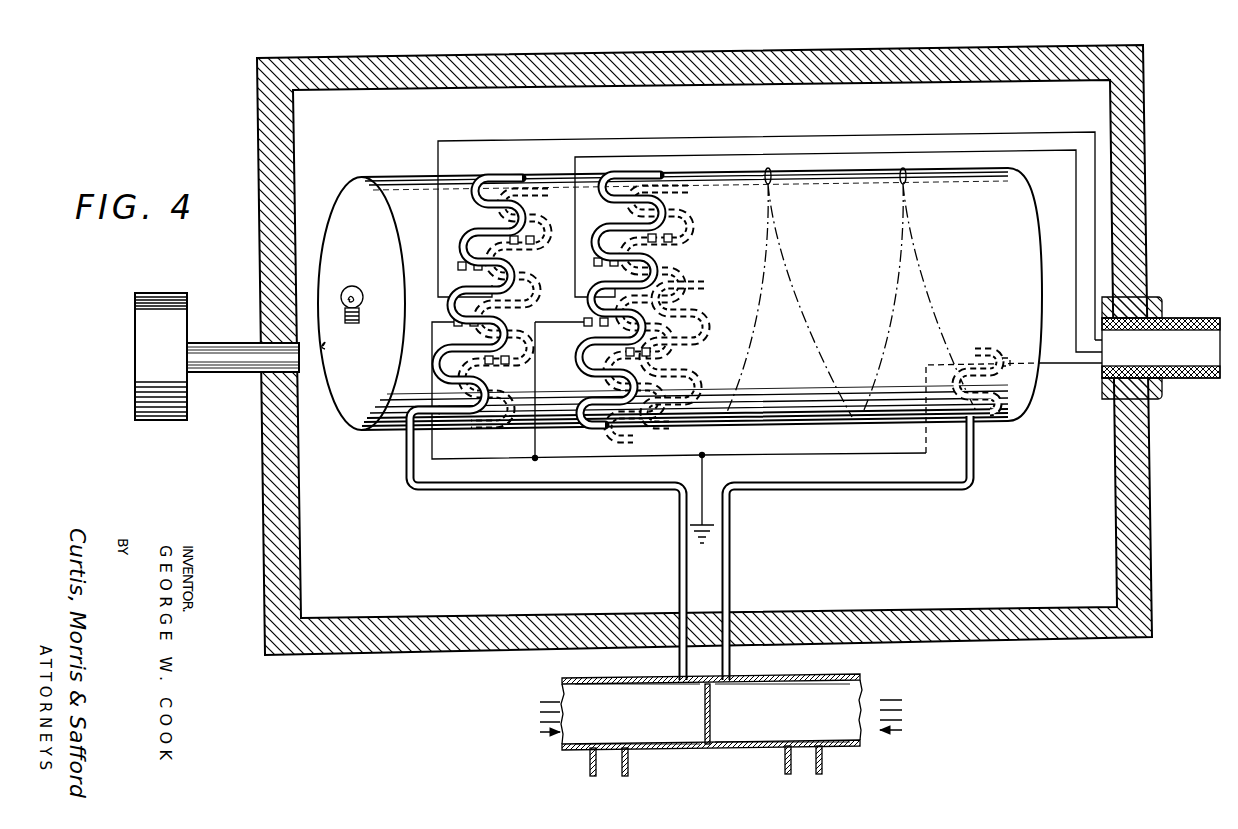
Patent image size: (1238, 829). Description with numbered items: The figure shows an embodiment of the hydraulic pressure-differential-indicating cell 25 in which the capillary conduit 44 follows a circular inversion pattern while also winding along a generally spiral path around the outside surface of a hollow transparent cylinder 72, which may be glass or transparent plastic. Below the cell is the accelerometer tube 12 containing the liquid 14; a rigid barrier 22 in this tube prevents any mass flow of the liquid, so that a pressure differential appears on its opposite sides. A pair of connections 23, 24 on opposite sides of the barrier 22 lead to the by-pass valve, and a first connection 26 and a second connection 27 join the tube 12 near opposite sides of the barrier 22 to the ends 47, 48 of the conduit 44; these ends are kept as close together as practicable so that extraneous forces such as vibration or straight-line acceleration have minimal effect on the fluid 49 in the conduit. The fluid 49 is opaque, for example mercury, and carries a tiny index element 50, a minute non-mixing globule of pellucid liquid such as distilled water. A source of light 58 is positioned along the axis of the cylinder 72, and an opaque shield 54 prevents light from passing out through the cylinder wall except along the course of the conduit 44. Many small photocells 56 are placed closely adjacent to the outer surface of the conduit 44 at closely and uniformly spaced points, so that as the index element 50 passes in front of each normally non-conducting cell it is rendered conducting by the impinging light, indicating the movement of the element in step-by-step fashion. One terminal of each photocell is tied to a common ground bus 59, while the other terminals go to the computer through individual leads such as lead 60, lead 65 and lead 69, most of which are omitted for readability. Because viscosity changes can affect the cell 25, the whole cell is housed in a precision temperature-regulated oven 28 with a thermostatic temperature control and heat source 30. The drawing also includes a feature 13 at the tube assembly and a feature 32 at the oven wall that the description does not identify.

The accelerometer tube 12 is at (660, 678).
The manifold 13 is at (594, 676).
The liquid 14 is at (820, 694).
The rigid barrier 22 is at (712, 728).
The connection 23 is at (630, 766).
The connection 24 is at (823, 766).
The hydraulic pressure-differential-indicating cell 25 is at (1028, 124).
The first connection 26 is at (679, 552).
The second connection 27 is at (728, 556).
The temperature-regulated oven 28 is at (370, 656).
The thermostatic temperature control and heat source 30 is at (187, 331).
The cable port 32 is at (1186, 384).
The capillary conduit 44 is at (530, 172).
The end of conduit 47 is at (676, 488).
The end of conduit 48 is at (733, 488).
The fluid 49 is at (408, 484).
The index element 50 is at (662, 238).
The opaque shield 54 is at (545, 200).
The photocells 56 is at (472, 264).
The source of light 58 is at (360, 292).
The common ground bus 59 is at (860, 453).
The individual lead 60 is at (682, 137).
The individual lead 65 is at (840, 154).
The individual lead 69 is at (1066, 365).
The hollow transparent cylinder 72 is at (325, 346).